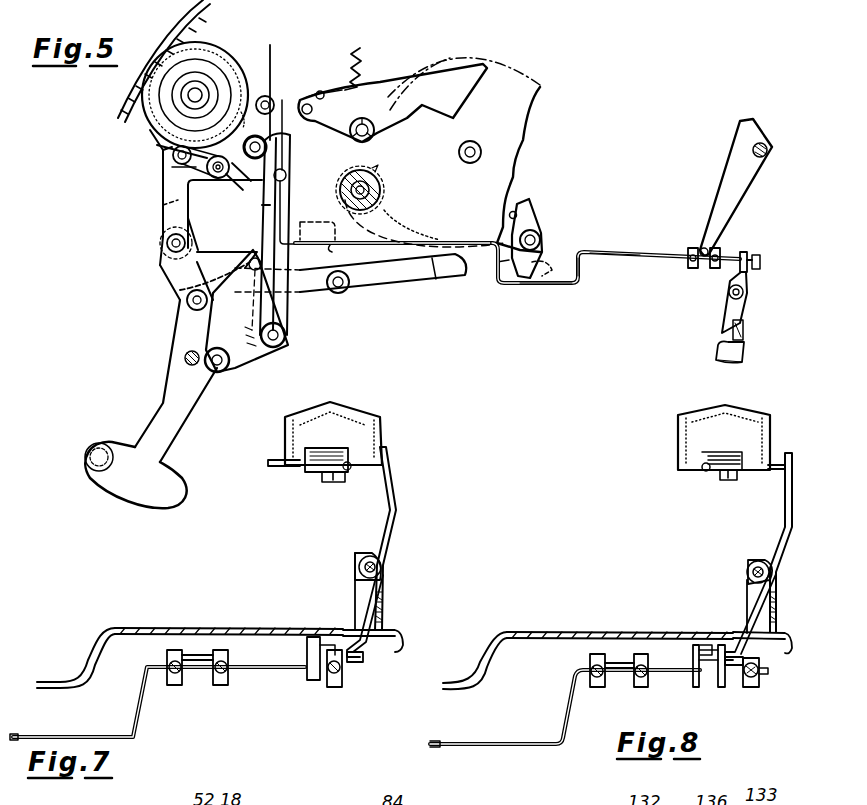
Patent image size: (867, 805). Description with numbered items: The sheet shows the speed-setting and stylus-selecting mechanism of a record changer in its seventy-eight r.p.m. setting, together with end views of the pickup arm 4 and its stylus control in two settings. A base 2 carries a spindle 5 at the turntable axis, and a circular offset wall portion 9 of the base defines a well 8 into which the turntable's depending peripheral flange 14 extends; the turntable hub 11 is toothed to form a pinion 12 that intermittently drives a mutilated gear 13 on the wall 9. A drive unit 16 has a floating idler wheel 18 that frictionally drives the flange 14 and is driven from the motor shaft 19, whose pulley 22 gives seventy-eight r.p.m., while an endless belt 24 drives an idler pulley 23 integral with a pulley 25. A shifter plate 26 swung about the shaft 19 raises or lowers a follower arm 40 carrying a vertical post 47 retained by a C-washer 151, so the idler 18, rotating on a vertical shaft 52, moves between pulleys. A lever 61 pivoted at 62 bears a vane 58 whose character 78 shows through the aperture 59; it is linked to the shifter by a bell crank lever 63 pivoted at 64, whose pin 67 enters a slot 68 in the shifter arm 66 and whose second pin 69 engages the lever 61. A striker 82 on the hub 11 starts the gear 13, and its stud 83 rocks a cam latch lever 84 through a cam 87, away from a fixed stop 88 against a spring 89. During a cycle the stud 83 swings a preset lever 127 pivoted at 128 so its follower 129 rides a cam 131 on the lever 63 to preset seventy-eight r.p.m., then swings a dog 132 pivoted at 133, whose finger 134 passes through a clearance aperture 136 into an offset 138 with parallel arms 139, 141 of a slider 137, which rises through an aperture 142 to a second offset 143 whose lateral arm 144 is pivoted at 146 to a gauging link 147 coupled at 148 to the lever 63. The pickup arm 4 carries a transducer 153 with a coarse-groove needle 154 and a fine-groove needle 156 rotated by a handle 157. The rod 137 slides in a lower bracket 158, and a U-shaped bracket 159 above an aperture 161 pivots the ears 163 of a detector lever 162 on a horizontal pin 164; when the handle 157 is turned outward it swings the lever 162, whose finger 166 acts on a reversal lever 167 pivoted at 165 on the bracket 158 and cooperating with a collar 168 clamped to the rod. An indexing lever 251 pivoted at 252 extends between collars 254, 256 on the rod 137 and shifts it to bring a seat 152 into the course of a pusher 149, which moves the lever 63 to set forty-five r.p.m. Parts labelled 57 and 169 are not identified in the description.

In FIG. 7, the base 2 is at (208, 627).
In FIG. 8, the base 2 is at (545, 630).
In FIG. 5, the pickup arm 4 is at (708, 362).
In FIG. 7, the pickup arm 4 is at (390, 432).
In FIG. 8, the pickup arm 4 is at (690, 432).
In FIG. 5, the spindle 5 is at (388, 196).
In FIG. 7, the well or recess 8 is at (55, 672).
In FIG. 7, the circular offset wall portion 9 is at (78, 650).
In FIG. 5, the hub 11 is at (348, 190).
In FIG. 5, the pinion 12 is at (377, 185).
In FIG. 5, the mutilated gear 13 is at (521, 151).
In FIG. 5, the depending peripheral flange 14 is at (165, 25).
In FIG. 5, the drive unit or motive unit 16 is at (143, 161).
In FIG. 5, the floating idler wheel 18 is at (245, 50).
In FIG. 5, the motor shaft 19 is at (165, 173).
In FIG. 5, the pulley 22 is at (173, 150).
In FIG. 5, the idler pulley 23 is at (201, 191).
In FIG. 5, the endless belt 24 is at (207, 173).
In FIG. 5, the pulley 25 is at (258, 155).
In FIG. 5, the shifter plate 26 is at (148, 128).
In FIG. 5, the follower arm 40 is at (293, 130).
In FIG. 5, the vertical post 47 is at (266, 97).
In FIG. 5, the vertical shaft 52 is at (192, 88).
In FIG. 5, the arm 57 is at (245, 176).
In FIG. 5, the indicator or vane 58 is at (128, 498).
In FIG. 5, the aperture 59 is at (92, 445).
In FIG. 5, the lever 61 is at (162, 405).
In FIG. 5, the pivot 62 is at (177, 358).
In FIG. 5, the bell crank lever 63 is at (175, 298).
In FIG. 5, the pivot 64 is at (222, 375).
In FIG. 5, the arm 66 is at (170, 200).
In FIG. 5, the pin 67 is at (167, 243).
In FIG. 5, the slot 68 is at (192, 222).
In FIG. 5, the second pin 69 is at (188, 303).
In FIG. 5, the speed indicia 78 is at (99, 457).
In FIG. 5, the striker 82 is at (374, 168).
In FIG. 5, the stud 83 is at (509, 216).
In FIG. 5, the cam latch lever 84 is at (383, 97).
In FIG. 5, the cam 87 is at (480, 105).
In FIG. 5, the fixed stop 88 is at (342, 77).
In FIG. 5, the spring 89 is at (358, 62).
In FIG. 5, the preset lever 127 is at (370, 285).
In FIG. 5, the pivot 128 is at (347, 288).
In FIG. 5, the vertical pin or follower 129 is at (180, 287).
In FIG. 5, the cam 131 is at (252, 272).
In FIG. 5, the dog or preset lever 132 is at (530, 216).
In FIG. 5, the pivot 133 is at (543, 236).
In FIG. 5, the vertical finger 134 is at (523, 280).
In FIG. 5, the clearance aperture 136 is at (582, 253).
In FIG. 5, the selector or indexing rod 137 is at (637, 262).
In FIG. 7, the selector or indexing rod 137 is at (132, 739).
In FIG. 8, the selector or indexing rod 137 is at (547, 746).
In FIG. 5, the offset 138 is at (556, 290).
In FIG. 7, the offset 138 is at (28, 735).
In FIG. 8, the offset 138 is at (455, 747).
In FIG. 5, the arm portion 139 is at (497, 265).
In FIG. 5, the arm portion 141 is at (590, 285).
In FIG. 5, the clearance aperture 142 is at (335, 251).
In FIG. 5, the second offset 143 is at (308, 222).
In FIG. 5, the lateral arm 144 is at (265, 208).
In FIG. 5, the pivot 146 is at (286, 175).
In FIG. 5, the gauging or test link 147 is at (287, 297).
In FIG. 5, the pivot 148 is at (286, 337).
In FIG. 5, the pusher 149 is at (308, 97).
In FIG. 5, the C-washer 151 is at (282, 100).
In FIG. 5, the seat 152 is at (270, 45).
In FIG. 7, the transducer 153 is at (320, 458).
In FIG. 8, the transducer 153 is at (706, 471).
In FIG. 7, the needle or stylus 154 is at (333, 482).
In FIG. 8, the needle or stylus 156 is at (728, 482).
In FIG. 7, the handle 157 is at (275, 468).
In FIG. 8, the handle 157 is at (780, 460).
In FIG. 7, the lower bracket 158 is at (310, 682).
In FIG. 8, the lower bracket 158 is at (722, 672).
In FIG. 7, the bracket 159 is at (385, 586).
In FIG. 8, the bracket 159 is at (777, 598).
In FIG. 7, the aperture 161 is at (388, 612).
In FIG. 8, the aperture 161 is at (762, 667).
In FIG. 7, the detector or indexing lever 162 is at (397, 515).
In FIG. 8, the detector or indexing lever 162 is at (786, 500).
In FIG. 7, the ears 163 is at (365, 580).
In FIG. 8, the ears 163 is at (748, 578).
In FIG. 7, the horizontal pin 164 is at (365, 562).
In FIG. 8, the horizontal pin 164 is at (755, 565).
In FIG. 5, the pivot 165 is at (728, 290).
In FIG. 7, the pivot 165 is at (332, 640).
In FIG. 8, the pivot 165 is at (700, 645).
In FIG. 5, the abutment portion or finger 166 is at (716, 343).
In FIG. 7, the abutment portion or finger 166 is at (352, 664).
In FIG. 8, the abutment portion or finger 166 is at (738, 700).
In FIG. 5, the reversal lever 167 is at (728, 302).
In FIG. 8, the reversal lever 167 is at (748, 632).
In FIG. 5, the collar or cylindrical contactor 168 is at (750, 253).
In FIG. 7, the collar or cylindrical contactor 168 is at (330, 688).
In FIG. 8, the collar or cylindrical contactor 168 is at (740, 690).
In FIG. 8, the screw 169 is at (753, 688).
In FIG. 5, the indexing lever 251 is at (733, 178).
In FIG. 7, the indexing lever 251 is at (200, 655).
In FIG. 8, the indexing lever 251 is at (620, 662).
In FIG. 5, the pivot 252 is at (763, 143).
In FIG. 5, the collar 254 is at (686, 255).
In FIG. 7, the collar 254 is at (170, 686).
In FIG. 8, the collar 254 is at (589, 665).
In FIG. 5, the collar 256 is at (712, 266).
In FIG. 7, the collar 256 is at (233, 686).
In FIG. 8, the collar 256 is at (640, 689).